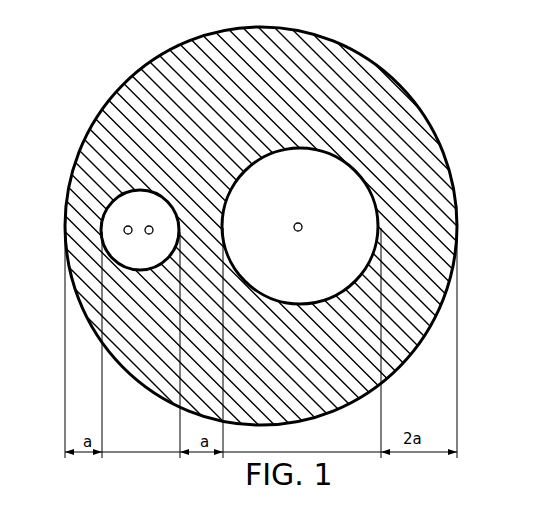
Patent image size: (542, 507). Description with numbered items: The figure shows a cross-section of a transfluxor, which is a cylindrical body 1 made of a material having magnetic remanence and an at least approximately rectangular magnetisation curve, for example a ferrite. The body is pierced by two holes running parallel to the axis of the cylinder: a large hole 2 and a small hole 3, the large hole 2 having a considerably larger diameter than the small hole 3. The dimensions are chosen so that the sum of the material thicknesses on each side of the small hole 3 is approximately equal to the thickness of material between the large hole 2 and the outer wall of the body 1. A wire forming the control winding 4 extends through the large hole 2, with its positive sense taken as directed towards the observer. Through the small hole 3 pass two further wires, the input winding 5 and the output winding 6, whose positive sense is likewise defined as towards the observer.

The cylindrical body 1 is at (327, 78).
The large hole 2 is at (350, 208).
The small hole 3 is at (130, 210).
The control winding 4 is at (301, 231).
The input winding 5 is at (150, 234).
The output winding 6 is at (127, 234).